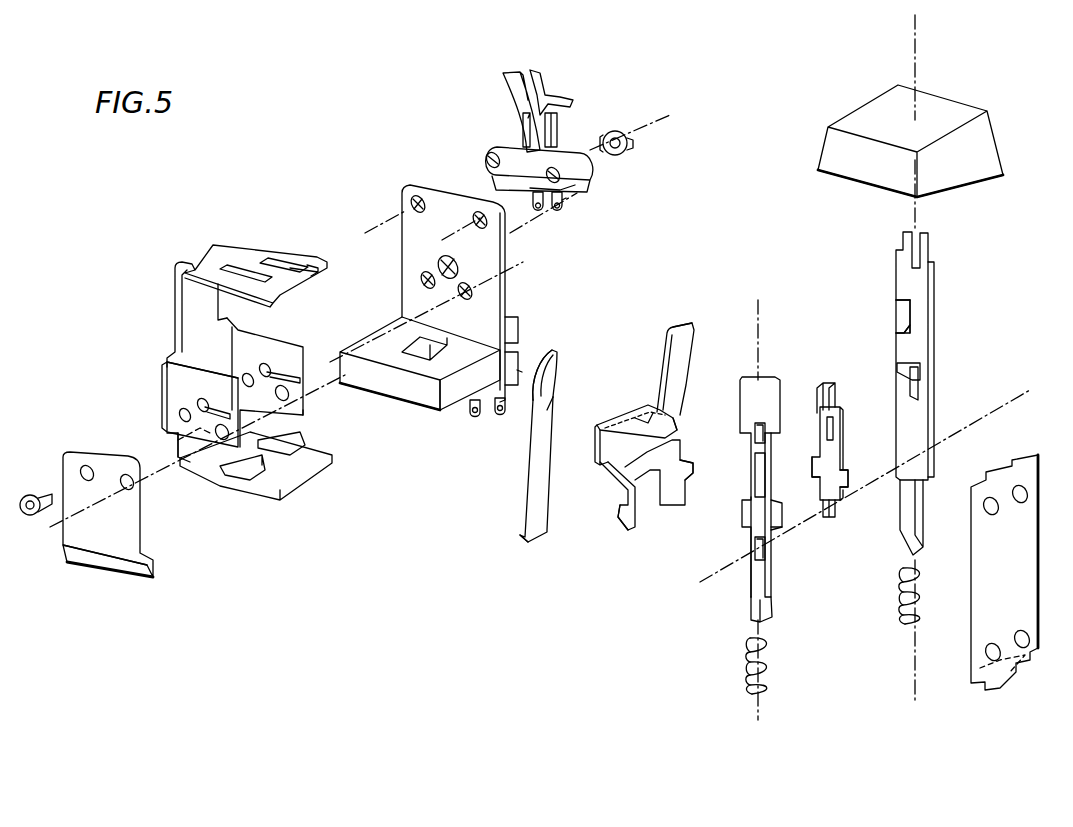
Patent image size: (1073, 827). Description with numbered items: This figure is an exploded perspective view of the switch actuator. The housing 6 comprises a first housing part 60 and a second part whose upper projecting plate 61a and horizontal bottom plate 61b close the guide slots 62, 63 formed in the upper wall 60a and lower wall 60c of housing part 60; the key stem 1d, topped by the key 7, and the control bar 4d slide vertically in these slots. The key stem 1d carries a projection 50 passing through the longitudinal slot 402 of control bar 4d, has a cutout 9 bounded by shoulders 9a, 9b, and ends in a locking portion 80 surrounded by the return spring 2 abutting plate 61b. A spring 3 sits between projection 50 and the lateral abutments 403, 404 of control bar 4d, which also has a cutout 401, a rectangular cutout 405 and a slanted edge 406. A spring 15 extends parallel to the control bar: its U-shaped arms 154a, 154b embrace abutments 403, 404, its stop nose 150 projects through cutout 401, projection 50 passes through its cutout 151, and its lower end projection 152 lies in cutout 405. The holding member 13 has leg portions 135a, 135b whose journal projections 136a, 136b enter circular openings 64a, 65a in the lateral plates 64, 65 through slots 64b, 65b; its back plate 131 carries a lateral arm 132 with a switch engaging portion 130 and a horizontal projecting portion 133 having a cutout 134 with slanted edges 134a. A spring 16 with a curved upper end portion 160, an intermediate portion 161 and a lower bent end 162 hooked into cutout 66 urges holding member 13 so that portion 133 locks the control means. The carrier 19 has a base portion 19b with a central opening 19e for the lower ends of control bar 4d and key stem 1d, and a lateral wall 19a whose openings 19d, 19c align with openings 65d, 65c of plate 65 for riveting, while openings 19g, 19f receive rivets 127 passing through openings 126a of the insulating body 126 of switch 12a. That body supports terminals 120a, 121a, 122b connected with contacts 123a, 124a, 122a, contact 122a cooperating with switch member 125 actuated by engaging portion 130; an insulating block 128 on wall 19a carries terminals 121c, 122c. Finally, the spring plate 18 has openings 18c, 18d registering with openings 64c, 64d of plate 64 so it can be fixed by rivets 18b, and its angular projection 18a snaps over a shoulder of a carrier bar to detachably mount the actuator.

The key stem 1d is at (918, 397).
The spring 2 is at (900, 600).
The spring 3 is at (770, 665).
The control bar 4d is at (759, 492).
The housing 6 is at (1022, 561).
The key 7 is at (975, 155).
The cutout 9 is at (903, 315).
The shoulder 9a is at (895, 305).
The shoulder 9b is at (908, 333).
The switch 12a is at (561, 159).
The holding member 13 is at (656, 433).
The spring 15 is at (839, 437).
The spring 16 is at (531, 428).
The spring plate 18 is at (91, 519).
The angular projection 18a is at (123, 560).
The rivets 18b is at (30, 517).
The opening 18c is at (133, 483).
The opening 18d is at (80, 468).
The carrier 19 is at (467, 314).
The lateral wall 19a is at (490, 330).
The base portion 19b is at (447, 398).
The opening 19c is at (468, 293).
The opening 19d is at (440, 267).
The central opening 19e is at (420, 350).
The opening 19f is at (478, 217).
The opening 19g is at (410, 200).
The projection 50 is at (908, 363).
The housing part 60 is at (212, 357).
The upper wall 60a is at (308, 260).
The lower wall 60c is at (197, 468).
The upper projecting plate 61a is at (998, 470).
The horizontal portion 61b is at (1007, 670).
The guide slot 62 is at (277, 263).
The guide slot 63 is at (248, 270).
The lateral plate 64 is at (186, 428).
The circular opening 64a is at (163, 380).
The slot 64b is at (247, 410).
The opening 64c is at (222, 440).
The opening 64d is at (180, 405).
The lateral plate 65 is at (287, 369).
The circular opening 65a is at (290, 373).
The slot 65b is at (305, 385).
The opening 65c is at (303, 415).
The opening 65d is at (248, 372).
The cutout 66 is at (160, 432).
The portion 80 is at (905, 535).
The terminal 120a is at (530, 210).
The terminal 121a is at (563, 213).
The terminal 121c is at (500, 416).
The contact 122a is at (560, 108).
The terminal 122b is at (545, 214).
The terminal 122c is at (477, 412).
The contact 123a is at (513, 117).
The contact 124a is at (563, 122).
The switch member 125 is at (505, 72).
The insulating body 126 is at (503, 143).
The openings 126a is at (577, 188).
The rivets 127 is at (637, 140).
The insulating block 128 is at (517, 370).
The switch engaging portion 130 is at (684, 330).
The back plate 131 is at (612, 438).
The lateral arm 132 is at (687, 383).
The projecting portion 133 is at (687, 418).
The cutout 134 is at (645, 410).
The slanted edges 134a is at (647, 420).
The leg portion 135a is at (623, 477).
The leg portion 135b is at (667, 463).
The journal projection 136a is at (625, 527).
The journal projection 136b is at (693, 480).
The stop nose 150 is at (823, 387).
The cutout 151 is at (835, 410).
The bottom tab 152 is at (835, 513).
The U-shaped arm 154a is at (817, 470).
The U-shaped arm 154b is at (842, 477).
The upper end portion 160 is at (540, 375).
The edge 161 is at (557, 393).
The lower end 162 is at (520, 540).
The cutout 401 is at (757, 425).
The longitudinally extending slot 402 is at (750, 438).
The lateral abutment 403 is at (745, 513).
The lateral abutment 404 is at (778, 527).
The rectangular cutout 405 is at (768, 553).
The slanted edge 406 is at (773, 440).